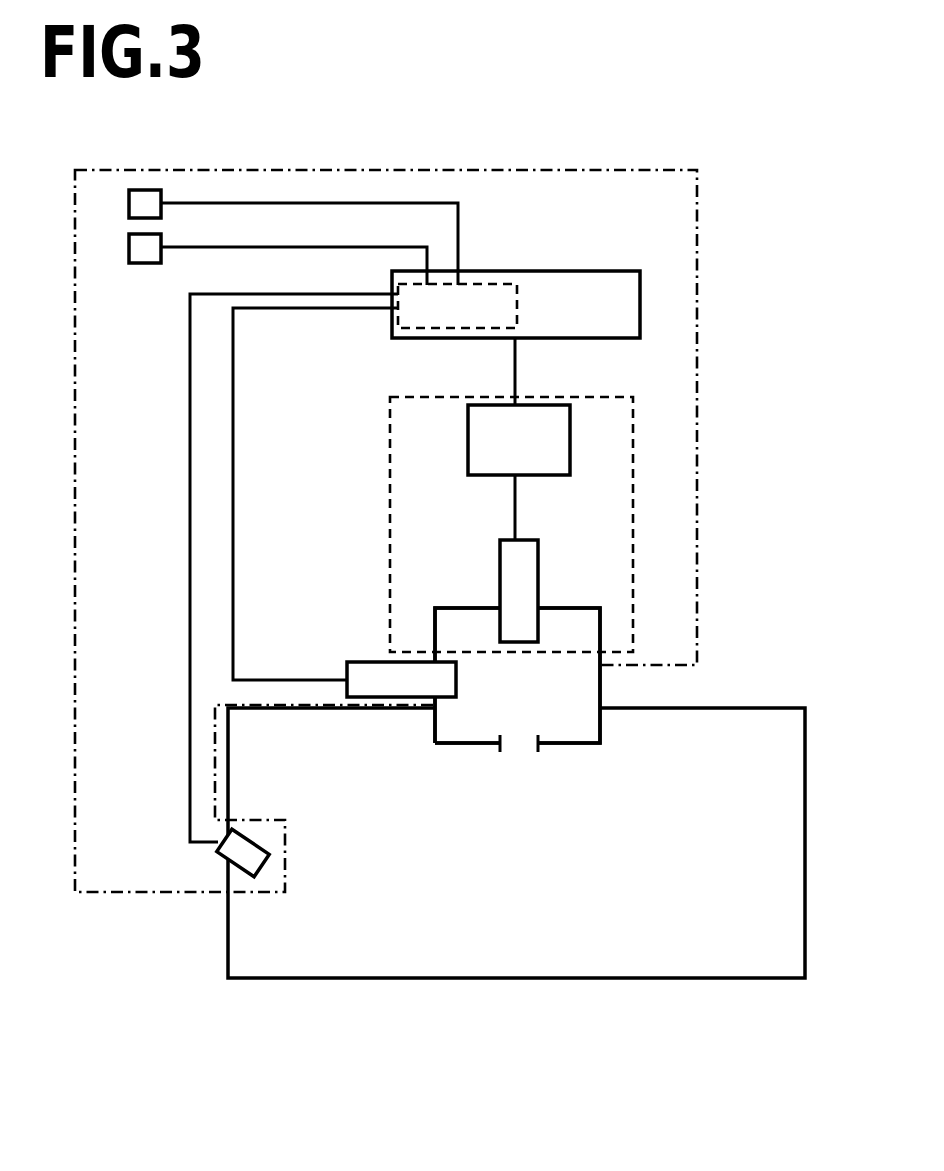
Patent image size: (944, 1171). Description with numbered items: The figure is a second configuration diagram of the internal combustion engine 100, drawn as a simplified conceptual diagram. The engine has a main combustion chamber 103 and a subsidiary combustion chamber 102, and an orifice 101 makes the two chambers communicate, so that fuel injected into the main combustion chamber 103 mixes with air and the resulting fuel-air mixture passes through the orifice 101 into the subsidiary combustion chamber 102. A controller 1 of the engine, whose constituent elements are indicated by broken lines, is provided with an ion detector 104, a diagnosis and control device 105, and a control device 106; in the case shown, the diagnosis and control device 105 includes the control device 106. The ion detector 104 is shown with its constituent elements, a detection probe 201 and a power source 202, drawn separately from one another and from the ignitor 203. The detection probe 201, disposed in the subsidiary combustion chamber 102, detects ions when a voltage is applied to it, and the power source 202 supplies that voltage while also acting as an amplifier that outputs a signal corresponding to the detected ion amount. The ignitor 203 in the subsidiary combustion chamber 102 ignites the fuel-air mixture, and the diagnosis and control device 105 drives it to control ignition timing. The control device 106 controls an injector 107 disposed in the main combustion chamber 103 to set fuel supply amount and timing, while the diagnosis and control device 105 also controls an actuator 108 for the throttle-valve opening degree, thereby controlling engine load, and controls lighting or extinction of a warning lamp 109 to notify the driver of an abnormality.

The controller 1 is at (386, 483).
The internal combustion engine 100 is at (737, 617).
The orifice 101 is at (546, 813).
The subsidiary combustion chamber 102 is at (593, 711).
The main combustion chamber 103 is at (554, 773).
The ion detector 104 is at (590, 504).
The diagnosis and control device 105 is at (522, 297).
The control device 106 is at (475, 258).
The injector 107 is at (268, 641).
The actuator 108 is at (293, 191).
The warning lamp 109 is at (269, 302).
The detection probe 201 is at (406, 560).
The power source 202 is at (424, 442).
The ignitor 203 is at (344, 502).